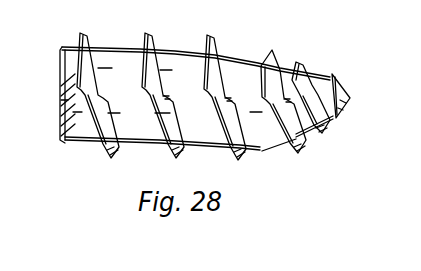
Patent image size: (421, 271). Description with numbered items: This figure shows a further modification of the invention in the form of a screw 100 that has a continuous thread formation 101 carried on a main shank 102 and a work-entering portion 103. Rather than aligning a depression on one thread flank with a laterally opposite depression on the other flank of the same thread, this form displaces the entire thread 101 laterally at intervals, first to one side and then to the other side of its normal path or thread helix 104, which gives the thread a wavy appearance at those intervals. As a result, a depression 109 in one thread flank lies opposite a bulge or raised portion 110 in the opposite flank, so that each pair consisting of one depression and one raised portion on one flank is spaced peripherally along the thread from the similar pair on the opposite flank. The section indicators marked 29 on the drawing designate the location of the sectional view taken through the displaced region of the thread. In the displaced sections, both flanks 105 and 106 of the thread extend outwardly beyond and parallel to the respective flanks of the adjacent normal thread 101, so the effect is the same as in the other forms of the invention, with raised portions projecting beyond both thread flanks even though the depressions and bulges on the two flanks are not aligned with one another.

The screw 100 is at (111, 34).
The continuous thread formation 101 is at (143, 35).
The main shank 102 is at (86, 145).
The work-entering portion 103 is at (348, 83).
The thread helix 104 is at (298, 88).
The thread flank 105 is at (318, 126).
The thread flank 106 is at (278, 106).
The depression 109 is at (301, 92).
The raised portion 110 is at (268, 86).
The section line for FIG. 29 is at (208, 106).